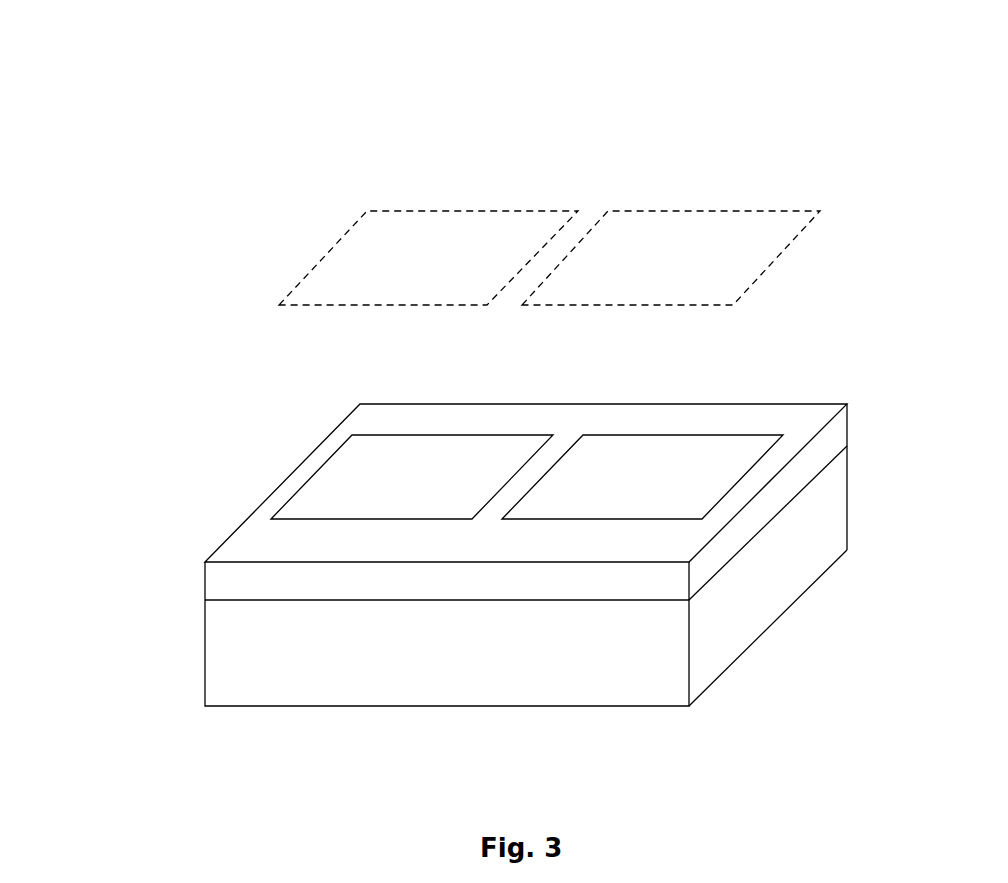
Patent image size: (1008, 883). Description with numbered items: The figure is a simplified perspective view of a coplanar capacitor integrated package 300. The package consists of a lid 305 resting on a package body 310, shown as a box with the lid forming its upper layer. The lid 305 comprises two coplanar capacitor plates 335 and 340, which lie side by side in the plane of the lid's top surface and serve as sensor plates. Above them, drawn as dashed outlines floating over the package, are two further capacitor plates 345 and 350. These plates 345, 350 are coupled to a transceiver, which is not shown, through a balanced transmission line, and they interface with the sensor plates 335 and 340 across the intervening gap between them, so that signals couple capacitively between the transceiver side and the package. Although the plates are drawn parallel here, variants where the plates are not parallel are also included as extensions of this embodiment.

The coplanar capacitor integrated package 300 is at (63, 44).
The lid 305 is at (226, 517).
The package body 310 is at (446, 717).
The coplanar capacitor plate 335 is at (416, 424).
The coplanar capacitor plate 340 is at (714, 424).
The capacitor plate 345 is at (324, 233).
The capacitor plate 350 is at (800, 244).